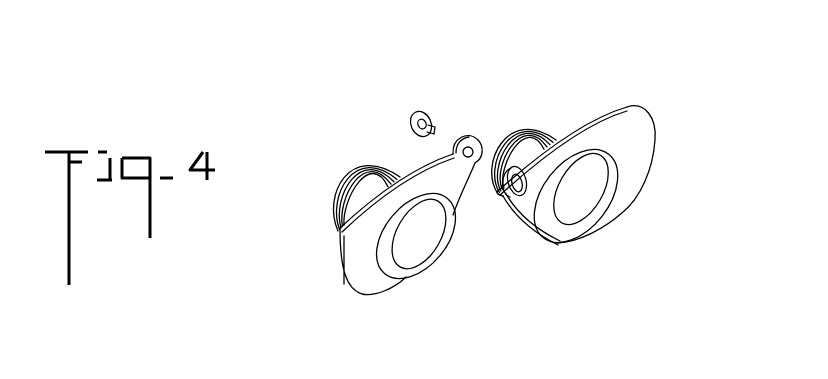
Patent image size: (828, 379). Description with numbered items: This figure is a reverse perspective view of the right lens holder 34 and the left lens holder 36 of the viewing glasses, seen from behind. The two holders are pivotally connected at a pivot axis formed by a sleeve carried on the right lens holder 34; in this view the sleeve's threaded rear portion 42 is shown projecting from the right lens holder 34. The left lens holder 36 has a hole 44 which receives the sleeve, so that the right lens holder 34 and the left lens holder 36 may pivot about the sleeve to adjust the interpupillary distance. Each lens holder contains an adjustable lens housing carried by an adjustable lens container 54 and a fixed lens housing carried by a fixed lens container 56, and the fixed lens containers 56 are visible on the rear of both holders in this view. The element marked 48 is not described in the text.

The right lens holder 34 is at (638, 135).
The left lens holder 36 is at (350, 270).
The threaded rear portion 42 is at (518, 187).
The hole 44 is at (472, 150).
The rivet 48 is at (412, 125).
The adjustable lens container 54 is at (337, 188).
The fixed lens container 56 is at (438, 247).